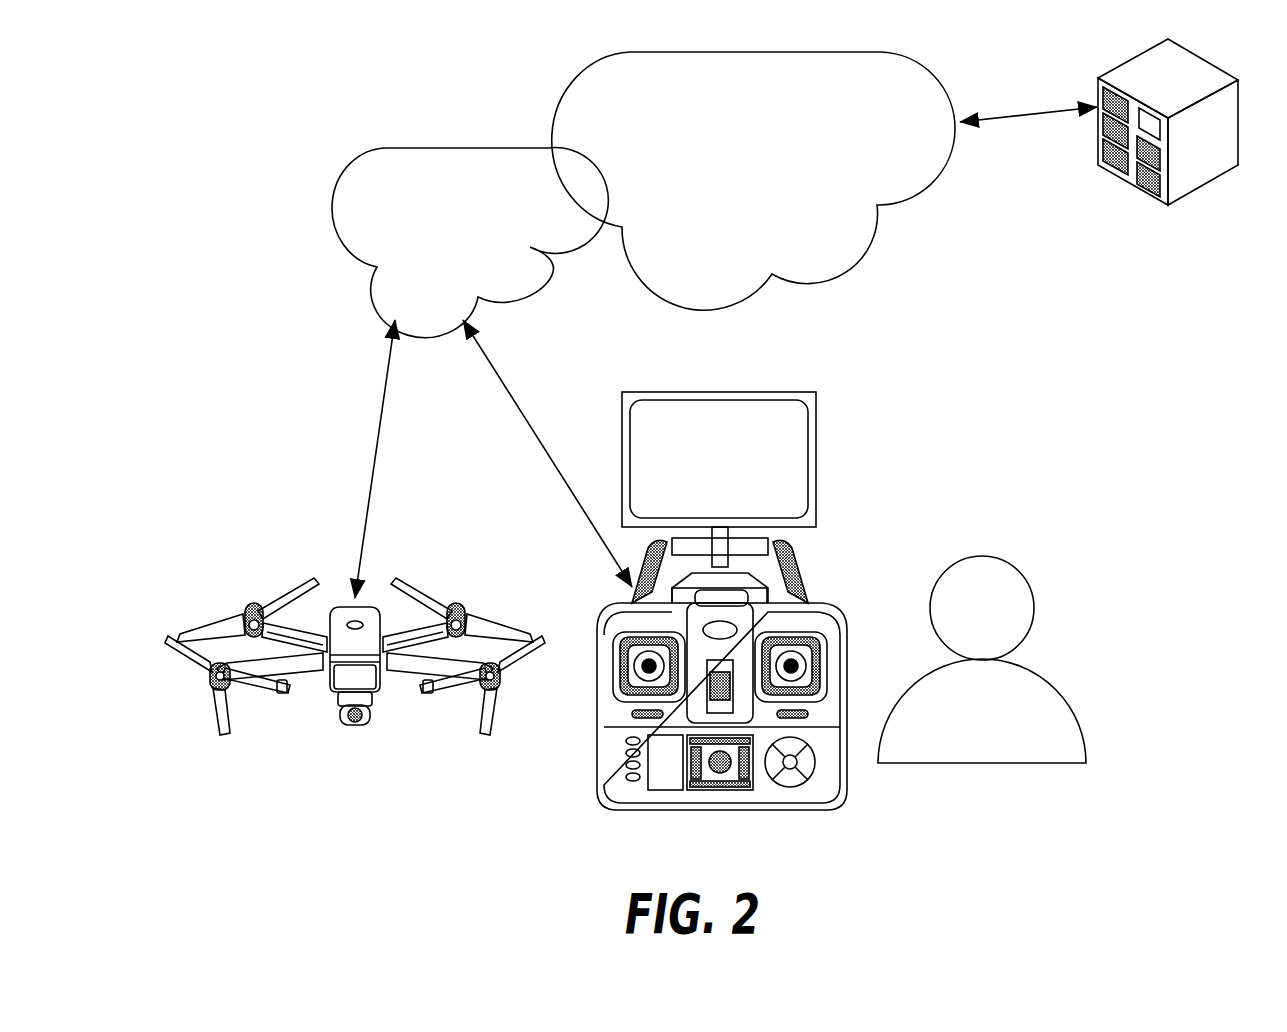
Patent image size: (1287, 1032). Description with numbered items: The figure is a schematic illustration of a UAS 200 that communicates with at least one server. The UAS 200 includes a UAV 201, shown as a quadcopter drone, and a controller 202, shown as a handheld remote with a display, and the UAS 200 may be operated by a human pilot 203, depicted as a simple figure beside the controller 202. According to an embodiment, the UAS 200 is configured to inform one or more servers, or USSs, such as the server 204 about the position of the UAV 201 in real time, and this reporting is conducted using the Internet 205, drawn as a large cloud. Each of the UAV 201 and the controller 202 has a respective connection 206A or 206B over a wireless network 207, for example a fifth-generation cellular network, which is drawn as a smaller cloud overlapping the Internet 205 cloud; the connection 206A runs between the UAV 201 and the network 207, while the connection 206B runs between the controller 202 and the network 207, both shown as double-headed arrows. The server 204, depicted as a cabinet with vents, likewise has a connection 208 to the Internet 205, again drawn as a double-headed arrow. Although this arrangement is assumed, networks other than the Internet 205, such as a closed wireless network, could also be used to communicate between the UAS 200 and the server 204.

The UAS 200 is at (304, 156).
The UAV 201 is at (350, 727).
The controller 202 is at (607, 797).
The human pilot 203 is at (993, 753).
The server 204 is at (1130, 180).
The Internet 205 is at (732, 221).
The connection 206A is at (380, 418).
The connection 206B is at (553, 467).
The network 207 is at (444, 274).
The connection 208 is at (1003, 110).